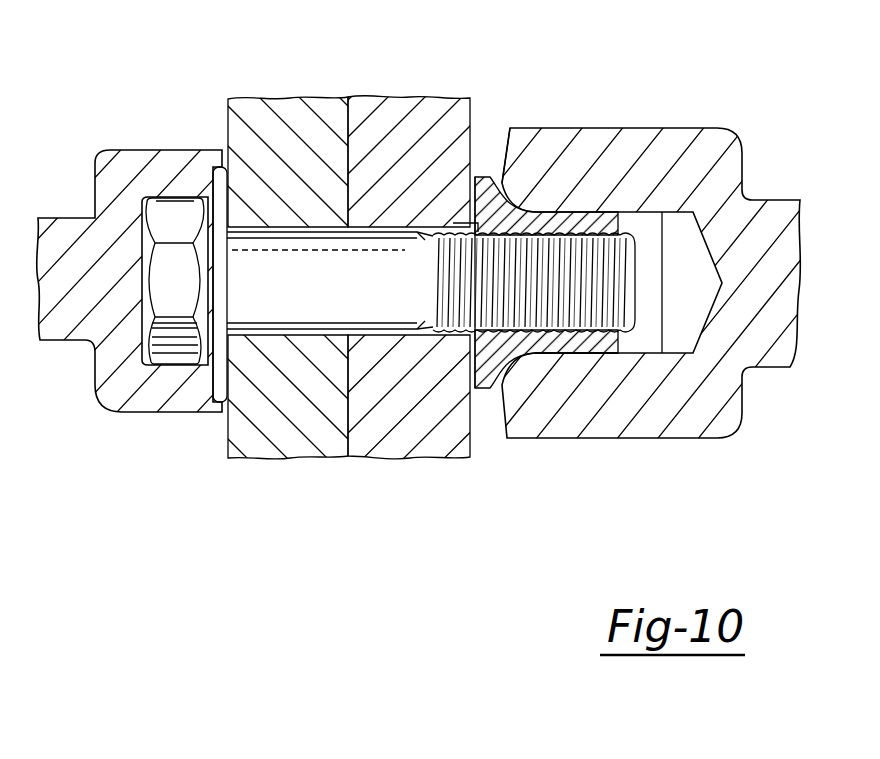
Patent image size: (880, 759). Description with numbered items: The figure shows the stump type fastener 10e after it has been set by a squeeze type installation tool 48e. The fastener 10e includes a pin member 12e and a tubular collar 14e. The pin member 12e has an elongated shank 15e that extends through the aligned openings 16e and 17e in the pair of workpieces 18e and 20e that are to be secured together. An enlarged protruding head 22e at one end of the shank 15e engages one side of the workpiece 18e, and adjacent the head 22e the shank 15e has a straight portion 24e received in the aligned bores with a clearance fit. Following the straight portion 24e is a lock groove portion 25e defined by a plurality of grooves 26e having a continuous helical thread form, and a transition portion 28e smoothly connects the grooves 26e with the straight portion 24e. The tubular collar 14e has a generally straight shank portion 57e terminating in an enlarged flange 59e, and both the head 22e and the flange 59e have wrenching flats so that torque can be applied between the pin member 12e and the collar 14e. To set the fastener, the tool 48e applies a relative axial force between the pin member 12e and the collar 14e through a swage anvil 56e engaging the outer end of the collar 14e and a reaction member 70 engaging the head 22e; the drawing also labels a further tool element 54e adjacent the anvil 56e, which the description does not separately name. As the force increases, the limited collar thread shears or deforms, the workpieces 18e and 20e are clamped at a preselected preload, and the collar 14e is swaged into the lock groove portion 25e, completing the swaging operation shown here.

The stump type fastener 10e is at (485, 156).
The pin member 12e is at (296, 238).
The tubular collar 14e is at (502, 160).
The elongated shank 15e is at (268, 413).
The opening 16e is at (256, 232).
The opening 17e is at (436, 214).
The workpiece 18e is at (288, 118).
The workpiece 20e is at (363, 115).
The enlarged protruding head 22e is at (215, 165).
The straight portion 24e is at (252, 308).
The lock groove portion 25e is at (457, 222).
The grooves 26e is at (458, 333).
The transition portion 28e is at (433, 268).
The squeeze type installation tool 48e is at (162, 425).
The anchor block 54e is at (640, 145).
The swage anvil 56e is at (513, 157).
The straight shank portion 57e is at (546, 345).
The enlarged flange 59e is at (490, 392).
The reaction member 70 is at (122, 148).